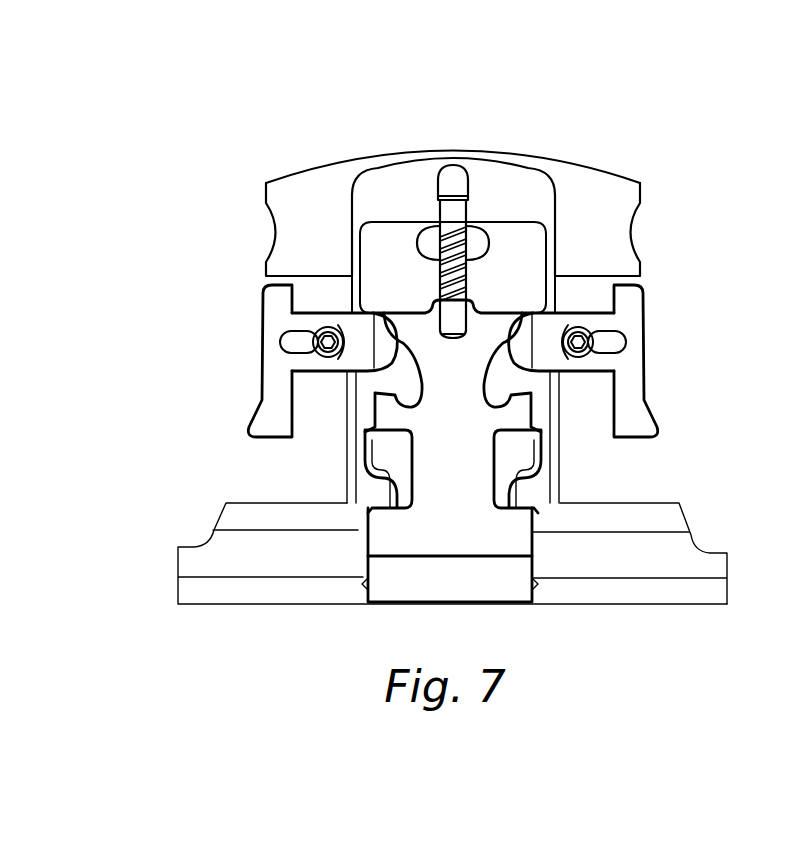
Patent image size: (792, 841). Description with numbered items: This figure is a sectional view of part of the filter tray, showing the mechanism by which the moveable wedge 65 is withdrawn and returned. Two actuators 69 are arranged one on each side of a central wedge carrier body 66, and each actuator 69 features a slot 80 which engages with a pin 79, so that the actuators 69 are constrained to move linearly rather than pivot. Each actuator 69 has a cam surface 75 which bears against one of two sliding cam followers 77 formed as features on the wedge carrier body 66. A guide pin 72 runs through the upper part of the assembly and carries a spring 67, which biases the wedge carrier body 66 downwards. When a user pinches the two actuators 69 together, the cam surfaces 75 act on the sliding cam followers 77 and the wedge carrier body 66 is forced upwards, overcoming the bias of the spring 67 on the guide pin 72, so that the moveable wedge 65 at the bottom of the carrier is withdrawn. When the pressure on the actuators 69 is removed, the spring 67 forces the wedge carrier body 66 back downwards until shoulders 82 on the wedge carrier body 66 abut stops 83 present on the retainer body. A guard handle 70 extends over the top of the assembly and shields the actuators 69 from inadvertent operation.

The moveable wedge 65 is at (490, 586).
The wedge carrier body 66 is at (393, 538).
The spring 67 is at (473, 222).
The actuator 69 is at (262, 406).
The guard handle 70 is at (588, 210).
The guide pin 72 is at (447, 180).
The cam surface 75 is at (377, 347).
The sliding cam follower 77 is at (412, 362).
The pin 79 is at (292, 370).
The slot 80 is at (283, 332).
The shoulder 82 is at (388, 420).
The stop 83 is at (387, 467).